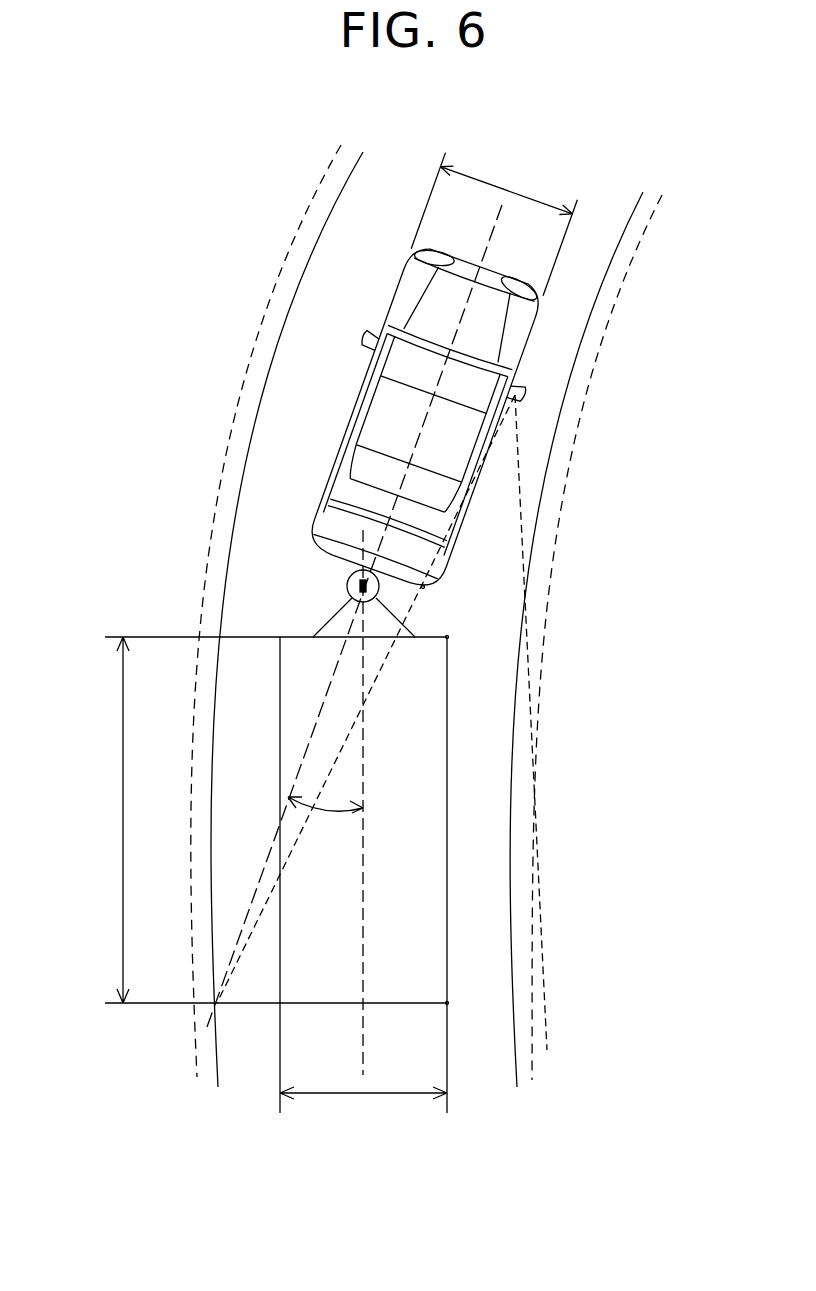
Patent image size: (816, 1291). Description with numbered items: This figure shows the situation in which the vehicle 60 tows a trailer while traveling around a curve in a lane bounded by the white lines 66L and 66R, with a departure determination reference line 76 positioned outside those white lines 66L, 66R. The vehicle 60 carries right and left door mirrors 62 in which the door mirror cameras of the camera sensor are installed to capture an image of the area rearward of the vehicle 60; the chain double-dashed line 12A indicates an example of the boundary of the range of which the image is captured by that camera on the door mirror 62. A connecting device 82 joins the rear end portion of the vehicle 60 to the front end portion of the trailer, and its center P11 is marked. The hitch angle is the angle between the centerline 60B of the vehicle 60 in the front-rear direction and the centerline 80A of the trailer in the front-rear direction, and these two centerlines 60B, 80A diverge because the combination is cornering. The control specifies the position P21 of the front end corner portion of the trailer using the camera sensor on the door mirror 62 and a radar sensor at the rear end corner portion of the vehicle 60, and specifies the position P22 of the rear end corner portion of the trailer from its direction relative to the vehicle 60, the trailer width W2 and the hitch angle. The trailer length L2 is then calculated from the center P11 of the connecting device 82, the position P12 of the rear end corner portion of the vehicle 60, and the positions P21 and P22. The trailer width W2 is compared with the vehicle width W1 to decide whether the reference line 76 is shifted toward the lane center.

The vehicle 60 is at (420, 369).
The centerline of the vehicle 60B is at (440, 427).
The door mirror 62 is at (362, 340).
The camera imaging range boundary 12A is at (518, 507).
The departure determination reference line 76 is at (318, 212).
The white line 66L is at (218, 1051).
The white line 66R is at (518, 1064).
The connecting device 82 is at (348, 579).
The centerline of the trailer 80A is at (363, 857).
The center of the connecting device P11 is at (347, 586).
The position of the rear end corner portion of the vehicle P12 is at (423, 587).
The position of the front end corner portion of the trailer P21 is at (447, 637).
The position of the rear end corner portion of the trailer P22 is at (447, 1003).
The width of the vehicle W1 is at (494, 221).
The width of the trailer W2 is at (363, 1115).
The length of the trailer L2 is at (99, 820).